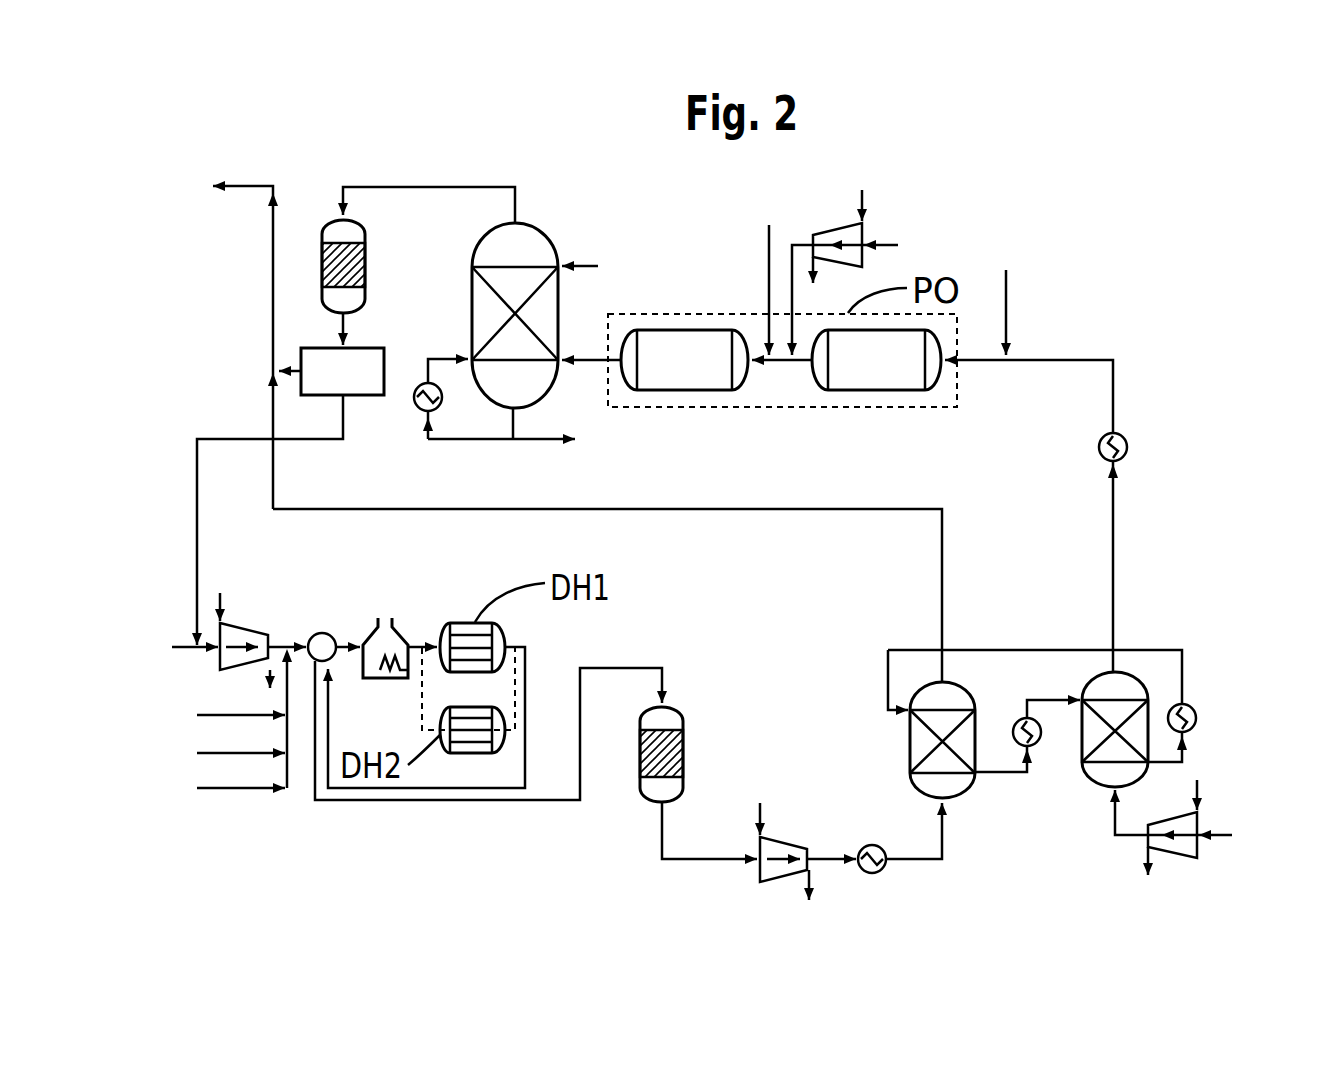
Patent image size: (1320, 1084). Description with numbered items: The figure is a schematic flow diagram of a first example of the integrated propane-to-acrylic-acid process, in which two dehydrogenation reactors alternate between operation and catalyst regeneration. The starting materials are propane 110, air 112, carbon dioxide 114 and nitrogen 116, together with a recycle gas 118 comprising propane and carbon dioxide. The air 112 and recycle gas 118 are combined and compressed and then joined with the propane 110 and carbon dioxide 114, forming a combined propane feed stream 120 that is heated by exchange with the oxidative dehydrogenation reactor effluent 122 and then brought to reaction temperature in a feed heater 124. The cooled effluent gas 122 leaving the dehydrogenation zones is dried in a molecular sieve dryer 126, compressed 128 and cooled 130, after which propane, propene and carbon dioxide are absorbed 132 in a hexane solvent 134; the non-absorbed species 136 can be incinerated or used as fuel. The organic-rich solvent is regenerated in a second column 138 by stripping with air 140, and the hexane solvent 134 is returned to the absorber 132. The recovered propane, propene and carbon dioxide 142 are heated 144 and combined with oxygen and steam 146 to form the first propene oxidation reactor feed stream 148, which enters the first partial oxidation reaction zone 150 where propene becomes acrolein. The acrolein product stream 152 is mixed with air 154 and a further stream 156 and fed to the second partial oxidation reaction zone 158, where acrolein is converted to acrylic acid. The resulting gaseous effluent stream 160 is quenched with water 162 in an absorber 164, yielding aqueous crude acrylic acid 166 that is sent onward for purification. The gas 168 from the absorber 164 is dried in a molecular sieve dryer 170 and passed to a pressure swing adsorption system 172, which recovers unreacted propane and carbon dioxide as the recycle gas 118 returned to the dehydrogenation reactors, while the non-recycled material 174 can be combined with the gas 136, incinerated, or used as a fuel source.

The propane 110 is at (210, 717).
The air 112 is at (191, 640).
The carbon dioxide 114 is at (210, 752).
The nitrogen 116 is at (210, 788).
The recycle gas 118 is at (293, 442).
The combined propane feed stream 120 is at (345, 642).
The oxidative dehydrogenation reactor effluent 122 is at (527, 675).
The feed heater 124 is at (393, 635).
The molecular sieve dryer 126 is at (683, 752).
The compressor 128 is at (783, 838).
The cooler 130 is at (874, 874).
The absorber 132 is at (907, 739).
The hexane solvent 134 is at (1003, 765).
The non-absorbed constituent species 136 is at (322, 511).
The second column 138 is at (1098, 790).
The air 140 is at (1219, 827).
The recovered propane, propene, and CO2 142 is at (1113, 562).
The heater 144 is at (1127, 438).
The oxygen and steam 146 is at (1003, 290).
The first propene oxidation reactor feed stream 148 is at (978, 362).
The first partial oxidation reaction zone 150 is at (897, 390).
The acrolein product stream 152 is at (807, 360).
The air 154 is at (872, 272).
The stream 156 is at (769, 269).
The second partial oxidation reaction zone 158 is at (682, 390).
The gaseous effluent stream 160 is at (588, 363).
The water 162 is at (607, 268).
The absorber 164 is at (540, 230).
The aqueous crude acrylic acid 166 is at (560, 443).
The gas from the absorber 168 is at (450, 187).
The molecular sieve dryer 170 is at (365, 263).
The pressure swing adsorption system 172 is at (362, 395).
The non-recycled material 174 is at (293, 439).